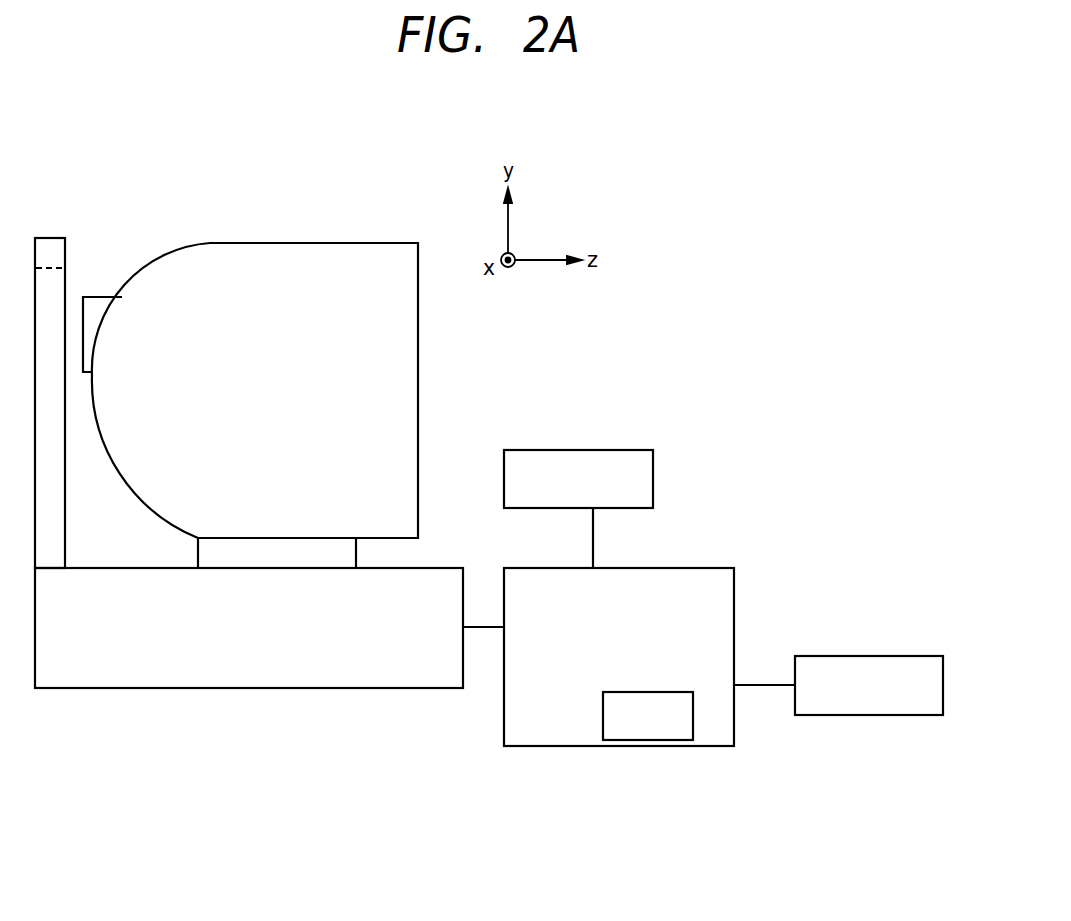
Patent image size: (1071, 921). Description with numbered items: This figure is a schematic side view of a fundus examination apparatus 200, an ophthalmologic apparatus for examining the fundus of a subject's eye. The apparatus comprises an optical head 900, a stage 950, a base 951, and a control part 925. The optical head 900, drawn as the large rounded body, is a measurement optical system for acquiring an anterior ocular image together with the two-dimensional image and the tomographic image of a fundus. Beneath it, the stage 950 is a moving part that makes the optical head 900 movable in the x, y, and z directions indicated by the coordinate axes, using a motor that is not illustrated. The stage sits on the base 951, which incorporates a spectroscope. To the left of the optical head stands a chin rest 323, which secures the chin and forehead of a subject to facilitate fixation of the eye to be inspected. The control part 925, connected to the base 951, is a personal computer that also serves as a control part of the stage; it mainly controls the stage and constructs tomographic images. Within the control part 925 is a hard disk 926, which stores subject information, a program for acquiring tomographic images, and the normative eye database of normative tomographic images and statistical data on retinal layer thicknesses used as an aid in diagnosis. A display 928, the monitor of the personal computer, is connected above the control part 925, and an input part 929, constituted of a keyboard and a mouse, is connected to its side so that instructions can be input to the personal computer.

The fundus examination apparatus 200 is at (132, 174).
The chin rest 323 is at (52, 236).
The optical head 900 is at (272, 265).
The stage 950 is at (212, 552).
The base 951 is at (146, 675).
The control part 925 is at (694, 585).
The hard disk 926 is at (645, 705).
The display 928 is at (575, 465).
The input part 929 is at (872, 668).